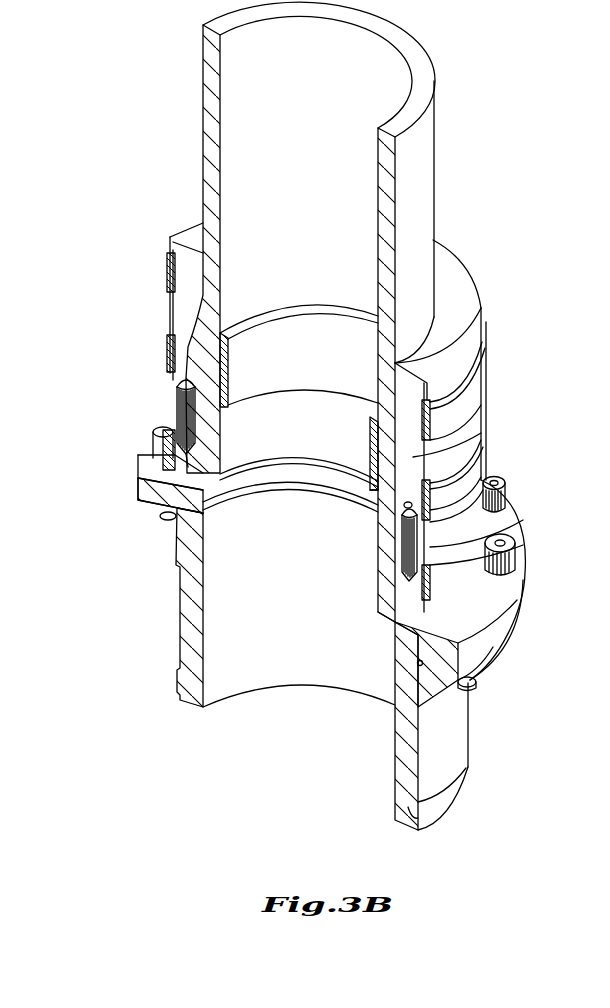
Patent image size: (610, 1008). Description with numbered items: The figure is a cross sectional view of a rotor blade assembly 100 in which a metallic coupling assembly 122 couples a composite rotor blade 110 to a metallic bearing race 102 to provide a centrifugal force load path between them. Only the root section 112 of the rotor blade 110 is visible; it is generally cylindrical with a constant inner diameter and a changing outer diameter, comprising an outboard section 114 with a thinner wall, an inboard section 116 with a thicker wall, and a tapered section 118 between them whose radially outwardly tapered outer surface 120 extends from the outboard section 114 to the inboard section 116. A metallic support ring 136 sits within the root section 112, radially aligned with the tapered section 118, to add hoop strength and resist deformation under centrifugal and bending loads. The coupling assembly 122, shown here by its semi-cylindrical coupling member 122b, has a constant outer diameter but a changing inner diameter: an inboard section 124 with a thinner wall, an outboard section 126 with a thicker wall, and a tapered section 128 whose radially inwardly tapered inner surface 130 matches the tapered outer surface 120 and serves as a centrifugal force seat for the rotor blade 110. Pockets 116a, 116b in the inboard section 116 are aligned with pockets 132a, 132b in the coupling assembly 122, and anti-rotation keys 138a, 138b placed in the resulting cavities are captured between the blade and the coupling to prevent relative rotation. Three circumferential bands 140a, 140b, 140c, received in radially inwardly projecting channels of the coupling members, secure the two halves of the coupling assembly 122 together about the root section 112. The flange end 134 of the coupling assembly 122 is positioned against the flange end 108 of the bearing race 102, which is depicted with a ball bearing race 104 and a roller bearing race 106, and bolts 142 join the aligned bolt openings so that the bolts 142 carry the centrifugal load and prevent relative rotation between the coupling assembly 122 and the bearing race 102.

The rotor blade assembly 100 is at (523, 197).
The metallic bearing race 102 is at (437, 740).
The ball bearing race 104 is at (430, 807).
The roller bearing race 106 is at (433, 687).
The flange end 108 is at (490, 647).
The composite rotor blade 110 is at (423, 132).
The root section 112 is at (423, 172).
The outboard section 114 is at (380, 207).
The inboard section 116 is at (383, 535).
The pocket 116a is at (138, 488).
The pocket 116b is at (400, 509).
The tapered section 118 is at (373, 454).
The radially outwardly tapered outer surface 120 is at (377, 430).
The metallic coupling assembly 122 is at (458, 255).
The coupling member 122b is at (470, 298).
The inboard section 124 is at (412, 608).
The outboard section 126 is at (398, 383).
The tapered section 128 is at (413, 457).
The radially inwardly tapered inner surface 130 is at (465, 413).
The pocket 132a is at (180, 363).
The pocket 132b is at (414, 587).
The flange end 134 is at (497, 617).
The metallic support ring 136 is at (267, 340).
The anti-rotation key 138a is at (178, 413).
The anti-rotation key 138b is at (403, 553).
The circumferential band 140a is at (480, 363).
The circumferential band 140b is at (481, 452).
The circumferential band 140c is at (481, 528).
The bolts 142 is at (507, 556).